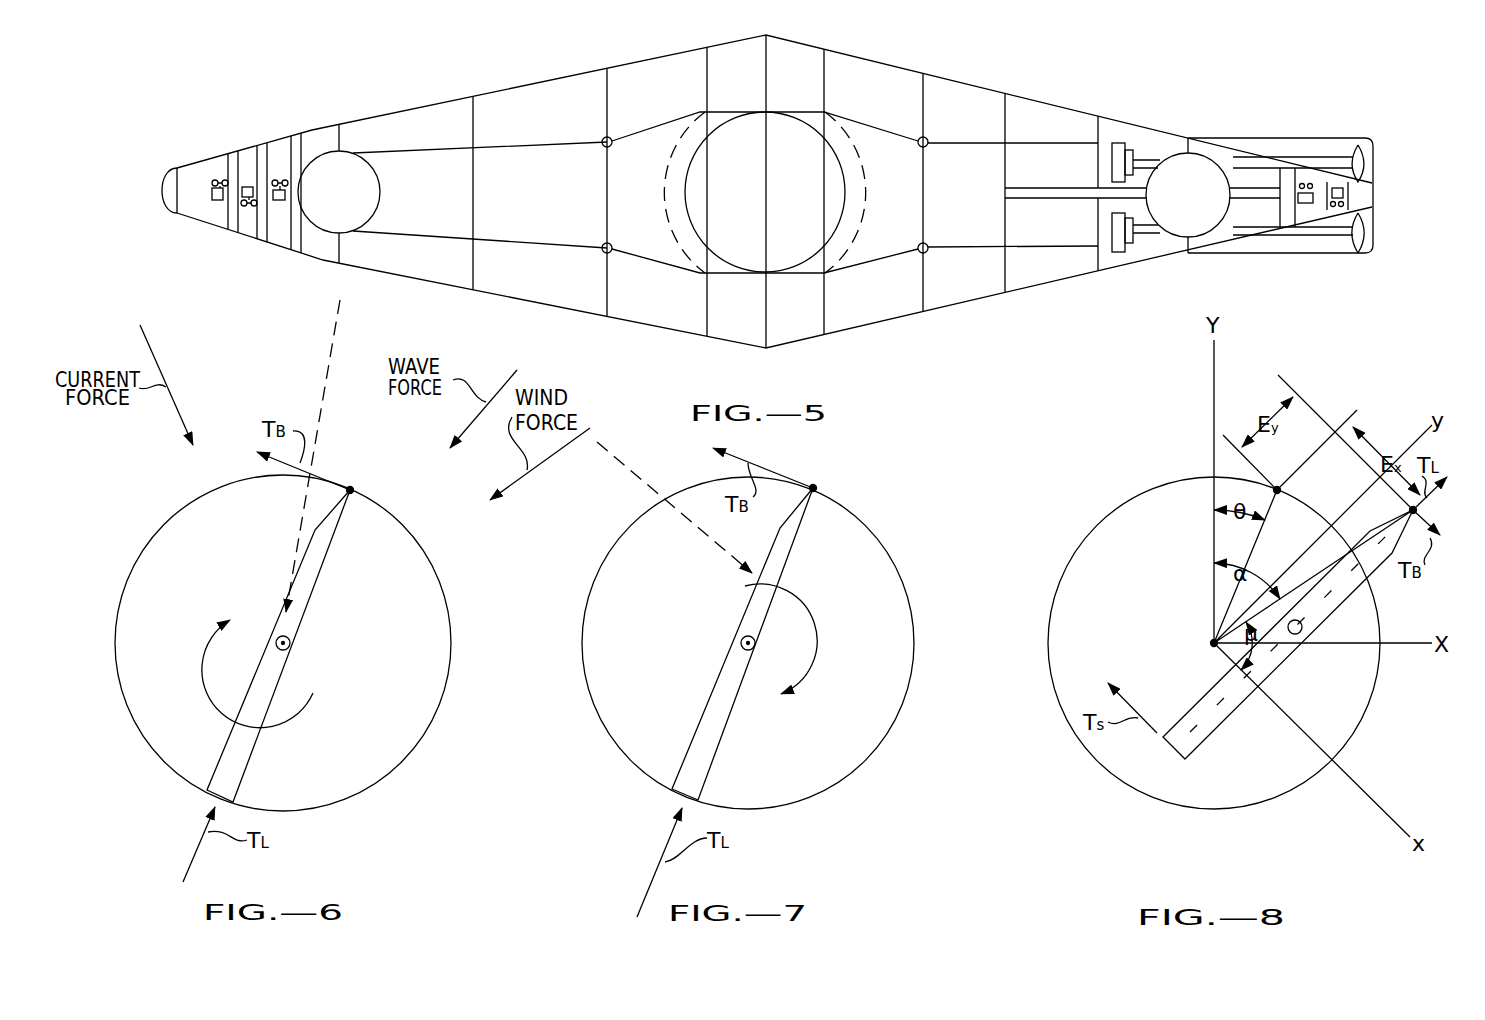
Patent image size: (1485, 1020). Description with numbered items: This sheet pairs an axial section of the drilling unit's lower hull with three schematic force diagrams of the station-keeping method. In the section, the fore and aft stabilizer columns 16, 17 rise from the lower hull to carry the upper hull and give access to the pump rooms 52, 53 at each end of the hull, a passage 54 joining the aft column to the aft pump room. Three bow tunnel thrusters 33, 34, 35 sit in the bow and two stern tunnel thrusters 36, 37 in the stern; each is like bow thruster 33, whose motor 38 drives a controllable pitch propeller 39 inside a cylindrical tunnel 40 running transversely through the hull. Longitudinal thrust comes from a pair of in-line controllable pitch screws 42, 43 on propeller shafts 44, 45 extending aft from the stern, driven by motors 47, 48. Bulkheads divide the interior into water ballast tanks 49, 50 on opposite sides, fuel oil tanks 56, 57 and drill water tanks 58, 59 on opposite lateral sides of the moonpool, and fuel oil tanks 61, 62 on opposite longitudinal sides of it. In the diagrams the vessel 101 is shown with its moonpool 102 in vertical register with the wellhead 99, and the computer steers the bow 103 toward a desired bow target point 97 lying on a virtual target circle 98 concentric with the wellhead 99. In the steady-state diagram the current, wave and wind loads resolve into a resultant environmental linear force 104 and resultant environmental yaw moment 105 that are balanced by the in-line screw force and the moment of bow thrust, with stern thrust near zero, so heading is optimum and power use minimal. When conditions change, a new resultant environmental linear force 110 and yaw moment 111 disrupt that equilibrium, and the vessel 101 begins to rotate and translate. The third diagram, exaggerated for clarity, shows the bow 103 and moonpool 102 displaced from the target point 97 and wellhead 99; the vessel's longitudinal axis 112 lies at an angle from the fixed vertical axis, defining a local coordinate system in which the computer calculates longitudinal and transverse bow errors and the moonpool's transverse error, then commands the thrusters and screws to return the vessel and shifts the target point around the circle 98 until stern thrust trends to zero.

In FIG. 5, the fore stabilizer column 16 is at (333, 152).
In FIG. 5, the aft stabilizer column 17 is at (1185, 155).
In FIG. 5, the bow tunnel thruster 33 is at (220, 220).
In FIG. 5, the bow tunnel thruster 34 is at (247, 230).
In FIG. 5, the bow tunnel thruster 35 is at (278, 240).
In FIG. 5, the stern tunnel thruster 36 is at (1305, 213).
In FIG. 5, the stern tunnel thruster 37 is at (1340, 210).
In FIG. 5, the motor 38 is at (213, 200).
In FIG. 5, the controllable pitch propeller 39 is at (212, 182).
In FIG. 5, the cylindrical tunnel 40 is at (212, 167).
In FIG. 5, the in-line controllable pitch screw 42 is at (1357, 144).
In FIG. 5, the in-line controllable pitch screw 43 is at (1363, 252).
In FIG. 5, the propeller shaft 44 is at (1235, 158).
In FIG. 5, the propeller shaft 45 is at (1280, 236).
In FIG. 5, the motor 47 is at (1113, 143).
In FIG. 5, the motor 48 is at (1118, 243).
In FIG. 5, the water ballast tank 49 is at (502, 110).
In FIG. 5, the water ballast tank 50 is at (518, 288).
In FIG. 5, the pump room 52 is at (437, 220).
In FIG. 5, the pump room 53 is at (980, 230).
In FIG. 5, the passage 54 is at (1082, 197).
In FIG. 5, the fuel oil tank 56 is at (805, 62).
In FIG. 5, the fuel oil tank 57 is at (723, 320).
In FIG. 5, the drill water tank 58 is at (733, 58).
In FIG. 5, the drill water tank 59 is at (858, 308).
In FIG. 5, the fuel oil tank 61 is at (547, 200).
In FIG. 5, the fuel oil tank 62 is at (900, 200).
In FIG. 6, the desired bow target point 97 is at (350, 490).
In FIG. 7, the desired bow target point 97 is at (813, 488).
In FIG. 8, the desired bow target point 97 is at (1276, 488).
In FIG. 6, the virtual target circle 98 is at (447, 601).
In FIG. 7, the virtual target circle 98 is at (912, 598).
In FIG. 8, the virtual target circle 98 is at (1358, 726).
In FIG. 6, the wellhead 99 is at (290, 646).
In FIG. 7, the wellhead 99 is at (741, 645).
In FIG. 8, the wellhead 99 is at (1212, 643).
In FIG. 6, the vessel 101 is at (264, 732).
In FIG. 7, the vessel 101 is at (732, 727).
In FIG. 8, the vessel 101 is at (1273, 672).
In FIG. 6, the moonpool 102 is at (290, 640).
In FIG. 7, the moonpool 102 is at (744, 636).
In FIG. 8, the moonpool 102 is at (1302, 628).
In FIG. 6, the bow 103 is at (352, 490).
In FIG. 8, the bow 103 is at (1412, 510).
In FIG. 6, the resultant environmental linear force 104 is at (337, 328).
In FIG. 6, the resultant environmental yaw moment 105 is at (228, 660).
In FIG. 7, the new resultant environmental linear force 110 is at (676, 510).
In FIG. 7, the new resultant environmental yaw moment 111 is at (806, 643).
In FIG. 8, the longitudinal axis 112 is at (1203, 721).